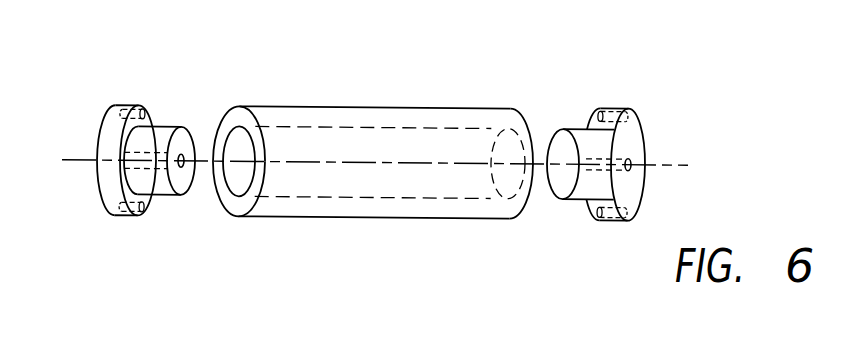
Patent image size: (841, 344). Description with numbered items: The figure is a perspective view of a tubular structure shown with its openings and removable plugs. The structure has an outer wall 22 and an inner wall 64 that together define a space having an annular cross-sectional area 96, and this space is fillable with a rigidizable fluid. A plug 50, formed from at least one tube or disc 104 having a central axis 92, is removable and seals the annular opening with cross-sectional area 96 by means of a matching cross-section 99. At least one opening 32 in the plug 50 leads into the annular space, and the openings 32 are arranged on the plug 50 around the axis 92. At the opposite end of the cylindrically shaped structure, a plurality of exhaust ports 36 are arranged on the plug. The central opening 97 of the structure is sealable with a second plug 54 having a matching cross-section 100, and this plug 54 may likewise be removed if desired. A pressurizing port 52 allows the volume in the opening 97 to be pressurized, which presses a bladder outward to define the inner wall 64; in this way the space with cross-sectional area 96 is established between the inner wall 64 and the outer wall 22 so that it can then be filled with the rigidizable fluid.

The outer wall 22 is at (373, 181).
The opening 32 is at (128, 176).
The exhaust port 36 is at (628, 116).
The plug 50 is at (127, 137).
The pressurizing port 52 is at (185, 167).
The plug 54 is at (155, 185).
The inner wall 64 is at (242, 205).
The central axis 92 is at (70, 160).
The annular cross-sectional area 96 is at (242, 116).
The opening 97 is at (237, 170).
The matching cross-section 99 is at (125, 133).
The matching cross-section 100 is at (185, 134).
The tube or disc 104 is at (101, 182).